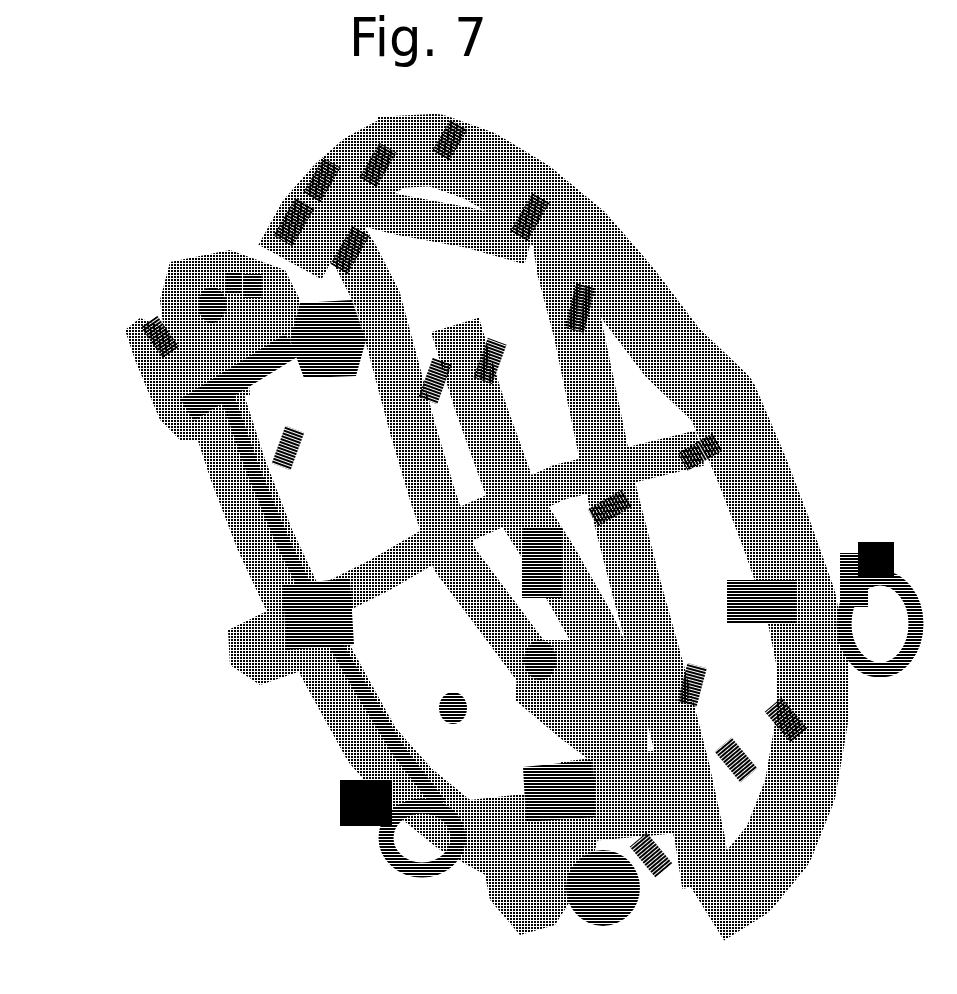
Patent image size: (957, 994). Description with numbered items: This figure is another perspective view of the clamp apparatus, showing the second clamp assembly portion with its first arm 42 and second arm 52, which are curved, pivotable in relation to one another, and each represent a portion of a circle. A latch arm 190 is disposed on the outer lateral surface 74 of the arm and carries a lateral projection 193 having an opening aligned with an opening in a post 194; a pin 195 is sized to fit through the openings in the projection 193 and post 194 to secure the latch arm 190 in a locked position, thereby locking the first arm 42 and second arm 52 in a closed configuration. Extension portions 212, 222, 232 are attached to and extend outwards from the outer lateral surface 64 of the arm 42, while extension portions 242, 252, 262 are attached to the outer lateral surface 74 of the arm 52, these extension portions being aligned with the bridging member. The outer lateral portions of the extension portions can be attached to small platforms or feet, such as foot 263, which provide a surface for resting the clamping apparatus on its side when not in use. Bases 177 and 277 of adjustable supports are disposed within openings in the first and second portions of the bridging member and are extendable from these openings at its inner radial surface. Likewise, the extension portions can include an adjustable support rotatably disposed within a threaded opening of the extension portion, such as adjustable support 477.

The first arm 42 is at (490, 425).
The second arm 52 is at (348, 672).
The outer lateral surface 64 is at (600, 605).
The outer lateral surface 74 is at (370, 693).
The base 177 is at (432, 523).
The latch arm 190 is at (215, 268).
The lateral projection 193 is at (233, 280).
The post 194 is at (220, 302).
The pin 195 is at (251, 282).
The extension portion 212 is at (340, 337).
The extension portion 222 is at (535, 545).
The extension portion 232 is at (627, 805).
The extension portion 242 is at (510, 867).
The extension portion 252 is at (288, 638).
The extension portion 262 is at (205, 363).
The foot 263 is at (165, 383).
The base 277 is at (350, 583).
The adjustable support 477 is at (295, 623).